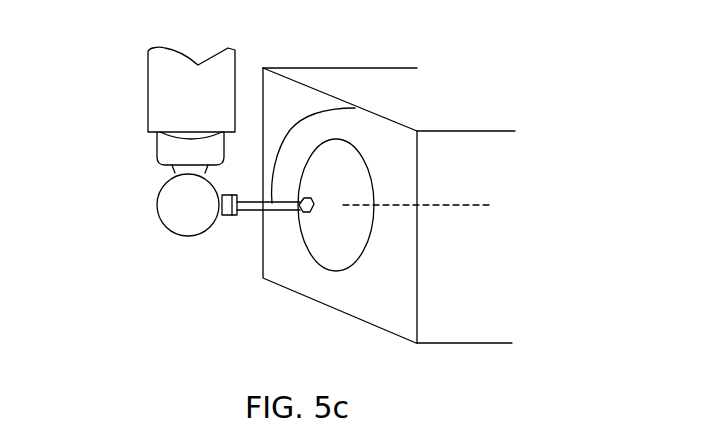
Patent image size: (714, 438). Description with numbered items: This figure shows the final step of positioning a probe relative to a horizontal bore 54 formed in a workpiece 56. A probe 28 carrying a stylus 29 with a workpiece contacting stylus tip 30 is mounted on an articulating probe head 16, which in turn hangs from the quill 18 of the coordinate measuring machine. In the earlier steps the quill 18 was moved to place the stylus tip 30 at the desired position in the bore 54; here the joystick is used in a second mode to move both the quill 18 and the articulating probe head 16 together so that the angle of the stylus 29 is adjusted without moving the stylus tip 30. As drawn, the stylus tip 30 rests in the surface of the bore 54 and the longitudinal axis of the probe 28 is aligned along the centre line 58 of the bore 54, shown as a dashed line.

The articulating probe head 16 is at (160, 179).
The quill 18 is at (148, 85).
The probe 28 is at (231, 218).
The stylus 29 is at (373, 100).
The stylus tip 30 is at (306, 200).
The horizontal bore 54 is at (338, 255).
The plate 56 is at (311, 75).
The centre line 58 is at (481, 205).